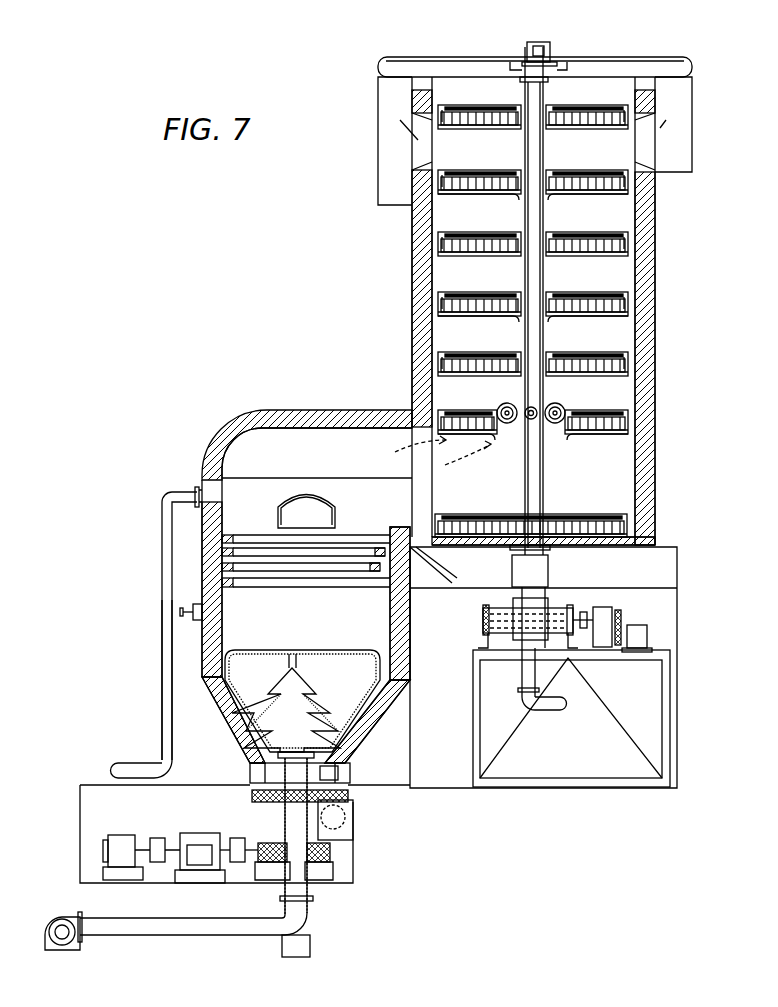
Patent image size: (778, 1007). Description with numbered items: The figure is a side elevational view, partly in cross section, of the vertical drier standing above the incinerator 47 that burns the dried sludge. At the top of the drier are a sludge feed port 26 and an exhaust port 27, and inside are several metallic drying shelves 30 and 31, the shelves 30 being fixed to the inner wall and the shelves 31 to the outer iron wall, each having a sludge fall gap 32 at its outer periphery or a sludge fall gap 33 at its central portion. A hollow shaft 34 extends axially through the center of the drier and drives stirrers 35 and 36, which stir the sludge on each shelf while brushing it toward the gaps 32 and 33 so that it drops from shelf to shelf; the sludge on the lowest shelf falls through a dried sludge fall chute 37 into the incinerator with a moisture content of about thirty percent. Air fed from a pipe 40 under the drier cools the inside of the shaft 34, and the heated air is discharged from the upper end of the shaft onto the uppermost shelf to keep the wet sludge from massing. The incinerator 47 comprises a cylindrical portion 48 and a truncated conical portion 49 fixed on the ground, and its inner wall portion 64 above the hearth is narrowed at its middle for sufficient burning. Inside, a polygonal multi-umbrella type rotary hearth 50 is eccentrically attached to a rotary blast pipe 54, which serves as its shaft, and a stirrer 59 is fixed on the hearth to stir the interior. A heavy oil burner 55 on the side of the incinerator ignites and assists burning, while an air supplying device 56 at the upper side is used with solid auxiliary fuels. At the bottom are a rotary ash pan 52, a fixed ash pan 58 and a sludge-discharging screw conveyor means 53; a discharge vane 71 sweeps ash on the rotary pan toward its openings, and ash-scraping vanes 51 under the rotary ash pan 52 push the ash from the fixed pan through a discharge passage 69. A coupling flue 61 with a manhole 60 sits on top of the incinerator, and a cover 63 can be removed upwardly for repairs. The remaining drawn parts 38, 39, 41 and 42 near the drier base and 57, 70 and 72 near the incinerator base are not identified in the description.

The sludge feed port 26 is at (548, 60).
The exhaust port 27 is at (412, 157).
The drying shelf 30 is at (505, 128).
The drying shelf 31 is at (466, 193).
The sludge fall gap 32 is at (438, 120).
The sludge fall gap 33 is at (510, 197).
The hollow shaft 34 is at (541, 330).
The stirrer 35 is at (600, 180).
The stirrer 36 is at (578, 185).
The dried sludge fall channel or chute 37 is at (446, 560).
The drive motor 38 is at (637, 633).
The gear reducer 39 is at (561, 608).
The pipe 40 is at (553, 712).
The drain pipe 41 is at (522, 680).
The shaft bearing block 42 is at (512, 570).
The incinerator 47 is at (162, 639).
The cylindrical portion 48 is at (222, 652).
The truncated conical portion 49 is at (366, 726).
The rotary hearth 50 is at (312, 719).
The ash-scraping vanes 51 is at (250, 792).
The rotary ash pan 52 is at (250, 771).
The sludge-discharging screw conveyor means 53 is at (342, 829).
The rotary blast pipe 54 is at (287, 830).
The heavy oil burner 55 is at (193, 612).
The air supplying device 56 is at (163, 500).
The outlet elbow 57 is at (146, 765).
The fixed ash pan 58 is at (256, 802).
The stirrer 59 is at (279, 652).
The manhole 60 is at (286, 503).
The coupling flue 61 is at (338, 428).
The cover 63 is at (284, 410).
The inner wall portion 64 is at (358, 548).
The discharge passage 69 is at (346, 813).
The bearing 70 is at (262, 851).
The discharge vane 71 is at (340, 778).
The blower 72 is at (56, 920).